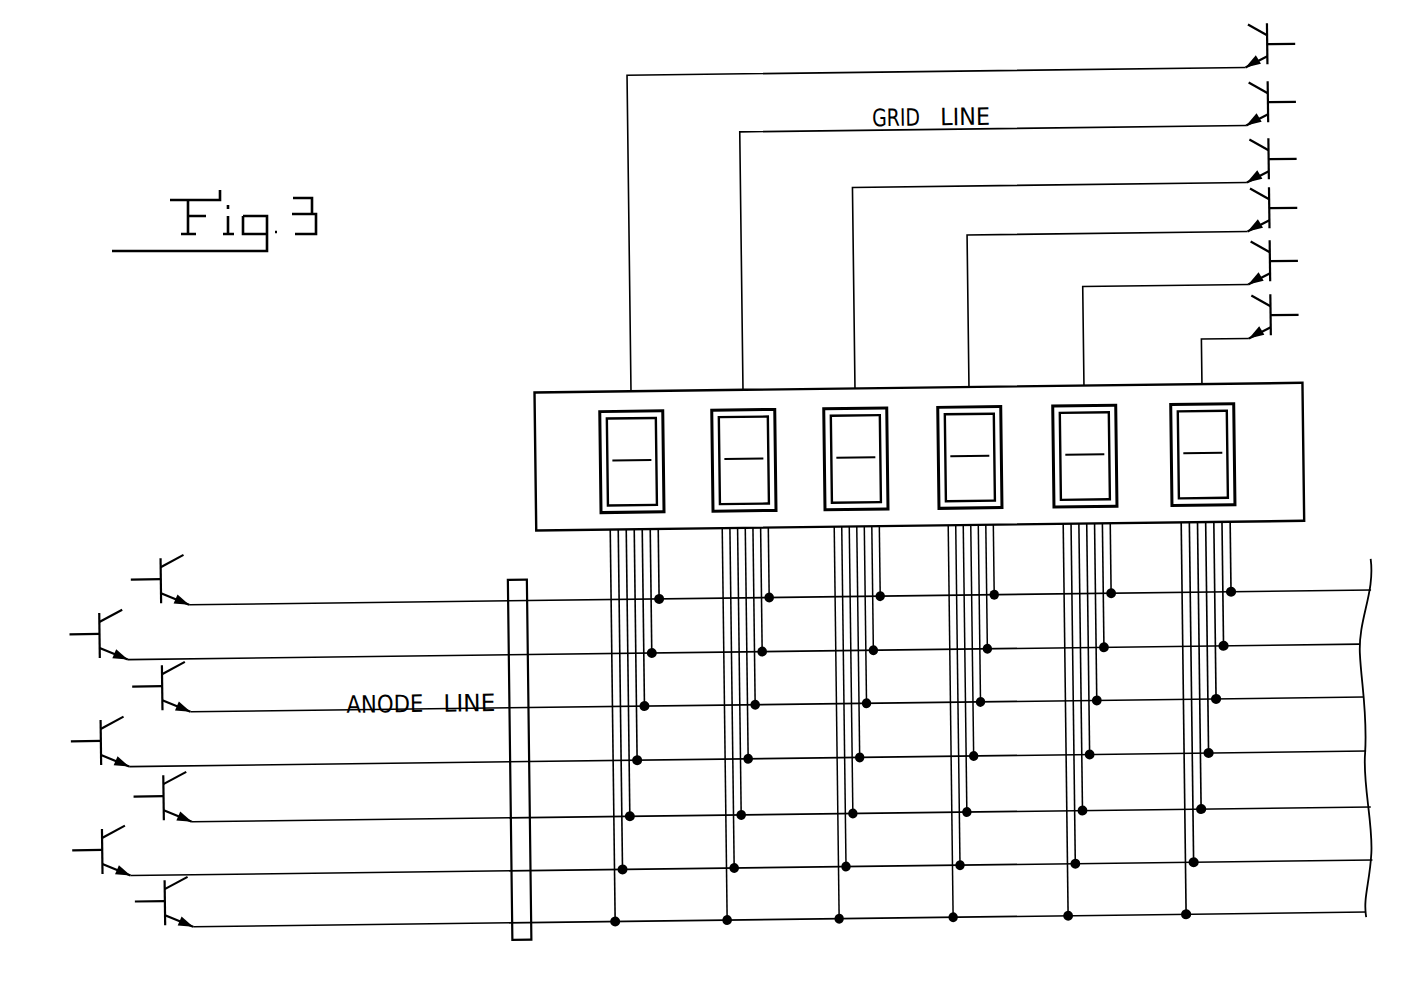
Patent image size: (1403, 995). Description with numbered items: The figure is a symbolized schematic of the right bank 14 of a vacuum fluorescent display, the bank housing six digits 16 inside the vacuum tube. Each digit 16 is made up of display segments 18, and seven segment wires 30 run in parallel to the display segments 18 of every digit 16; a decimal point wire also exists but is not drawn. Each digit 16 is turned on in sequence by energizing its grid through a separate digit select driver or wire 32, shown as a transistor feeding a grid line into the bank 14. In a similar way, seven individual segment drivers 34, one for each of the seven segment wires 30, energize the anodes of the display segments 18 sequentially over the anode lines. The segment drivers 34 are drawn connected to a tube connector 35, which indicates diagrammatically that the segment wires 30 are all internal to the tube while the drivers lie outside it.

The right bank 14 is at (1314, 453).
The digit 16 is at (602, 462).
The display segment 18 is at (760, 458).
The segment wire 30 is at (1233, 551).
The digit select driver 32 is at (1282, 35).
The segment driver 34 is at (158, 563).
The tube connector 35 is at (516, 576).